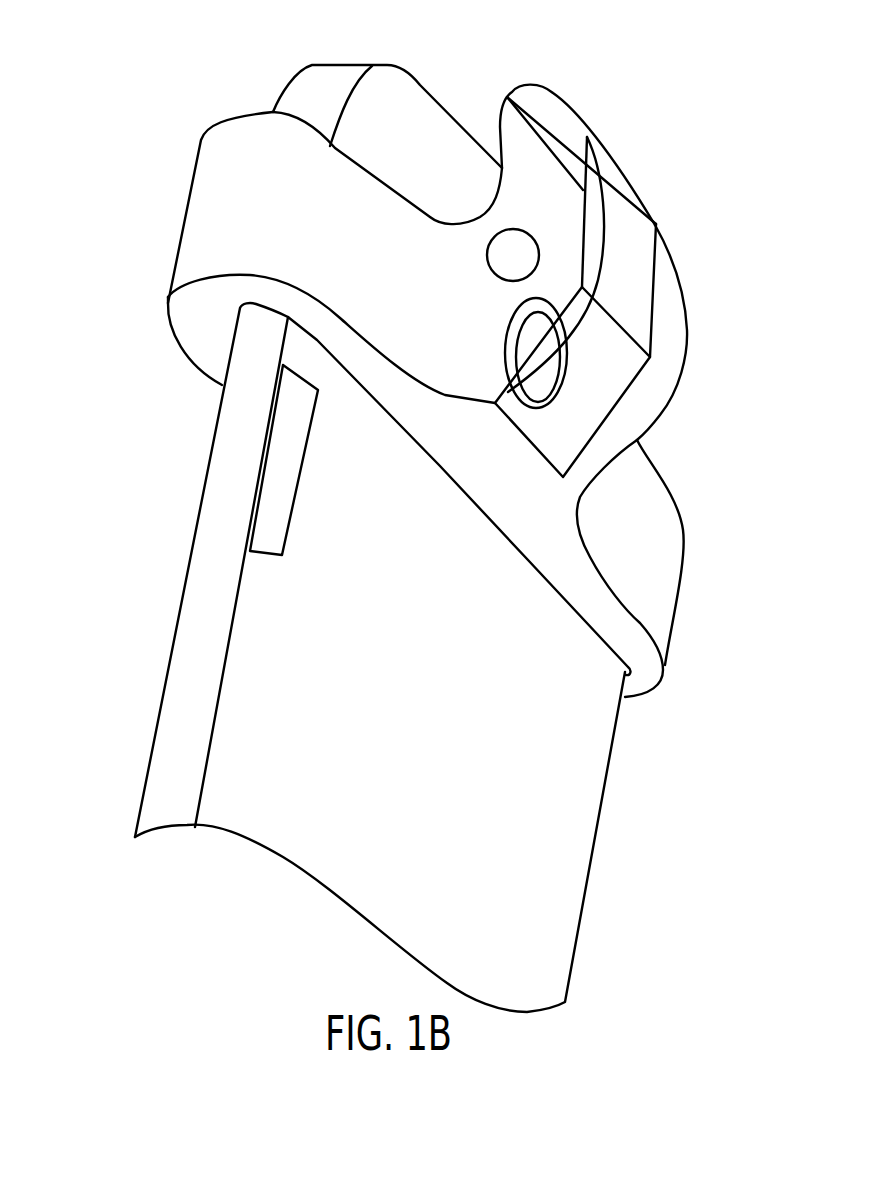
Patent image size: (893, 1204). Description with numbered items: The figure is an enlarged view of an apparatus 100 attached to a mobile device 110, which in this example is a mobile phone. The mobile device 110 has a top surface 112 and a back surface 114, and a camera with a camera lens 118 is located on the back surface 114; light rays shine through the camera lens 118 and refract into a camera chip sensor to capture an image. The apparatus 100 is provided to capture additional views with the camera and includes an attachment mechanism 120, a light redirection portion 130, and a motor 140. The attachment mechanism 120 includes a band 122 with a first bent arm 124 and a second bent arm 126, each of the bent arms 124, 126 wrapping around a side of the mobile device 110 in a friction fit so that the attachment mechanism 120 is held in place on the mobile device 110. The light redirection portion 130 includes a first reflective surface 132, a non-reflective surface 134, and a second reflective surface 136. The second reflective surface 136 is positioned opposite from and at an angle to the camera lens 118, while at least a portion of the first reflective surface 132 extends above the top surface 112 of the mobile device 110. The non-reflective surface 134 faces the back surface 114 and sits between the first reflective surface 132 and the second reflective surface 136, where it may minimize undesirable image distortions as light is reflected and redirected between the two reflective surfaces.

The apparatus 100 is at (735, 355).
The mobile device 110 is at (105, 620).
The top surface 112 is at (352, 77).
The back surface 114 is at (210, 545).
The camera lens 118 is at (510, 323).
The attachment mechanism 120 is at (265, 250).
The band 122 is at (267, 173).
The first bent arm 124 is at (193, 332).
The second bent arm 126 is at (672, 643).
The light redirection portion 130 is at (547, 103).
The first reflective surface 132 is at (575, 152).
The non-reflective surface 134 is at (630, 250).
The second reflective surface 136 is at (593, 385).
The motor 140 is at (510, 252).